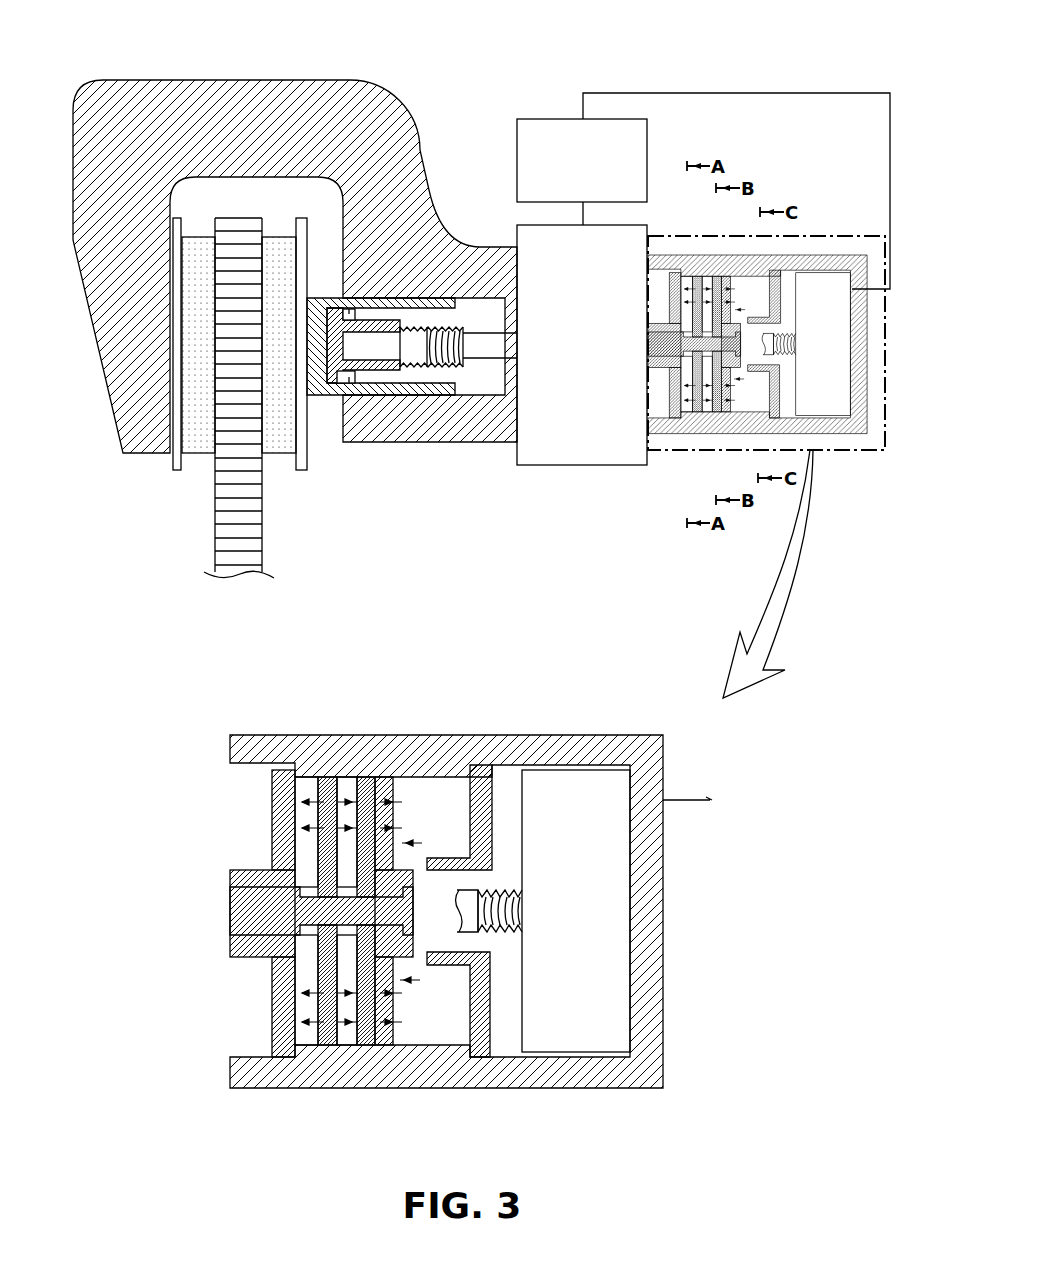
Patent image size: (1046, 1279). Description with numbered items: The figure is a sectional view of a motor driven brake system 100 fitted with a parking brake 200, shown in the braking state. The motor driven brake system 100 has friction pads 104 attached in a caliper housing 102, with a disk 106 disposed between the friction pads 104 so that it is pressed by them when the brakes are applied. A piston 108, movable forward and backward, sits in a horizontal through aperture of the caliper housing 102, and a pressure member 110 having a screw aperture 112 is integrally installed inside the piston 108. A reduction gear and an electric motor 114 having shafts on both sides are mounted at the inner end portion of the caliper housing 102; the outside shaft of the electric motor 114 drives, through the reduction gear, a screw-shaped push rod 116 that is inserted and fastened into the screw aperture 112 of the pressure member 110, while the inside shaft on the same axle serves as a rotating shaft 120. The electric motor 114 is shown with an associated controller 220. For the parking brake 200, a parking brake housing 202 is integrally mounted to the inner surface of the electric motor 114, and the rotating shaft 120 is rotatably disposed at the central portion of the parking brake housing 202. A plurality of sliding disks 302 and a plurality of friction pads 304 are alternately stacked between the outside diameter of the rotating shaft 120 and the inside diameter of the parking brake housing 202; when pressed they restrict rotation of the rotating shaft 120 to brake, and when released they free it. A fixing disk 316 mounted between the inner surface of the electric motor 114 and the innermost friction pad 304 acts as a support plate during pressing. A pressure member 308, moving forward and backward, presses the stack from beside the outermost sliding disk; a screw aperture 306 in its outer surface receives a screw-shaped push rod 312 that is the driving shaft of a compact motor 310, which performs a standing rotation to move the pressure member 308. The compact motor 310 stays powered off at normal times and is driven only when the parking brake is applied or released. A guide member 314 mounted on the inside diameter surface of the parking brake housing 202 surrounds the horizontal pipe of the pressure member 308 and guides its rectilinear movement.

The motor driven brake system 100 is at (436, 143).
The caliper housing 102 is at (286, 68).
The friction pads 104 is at (197, 447).
The disk 106 is at (243, 517).
The piston 108 is at (317, 398).
The pressure member 110 is at (410, 397).
The screw aperture 112 is at (447, 397).
The electric motor 114 is at (570, 460).
The screw-shaped push rod 116 is at (492, 397).
The rotating shaft 120 is at (247, 913).
The parking brake 200 is at (857, 467).
The parking brake housing 202 is at (575, 743).
The controller 220 is at (545, 119).
The sliding disks 302 is at (368, 777).
The friction pads 304 is at (350, 1042).
The screw aperture 306 is at (503, 957).
The pressure member 308 is at (417, 777).
The compact motor 310 is at (622, 1020).
The screw-shaped push rod 312 is at (512, 868).
The guide member 314 is at (506, 768).
The fixing disk 316 is at (276, 823).